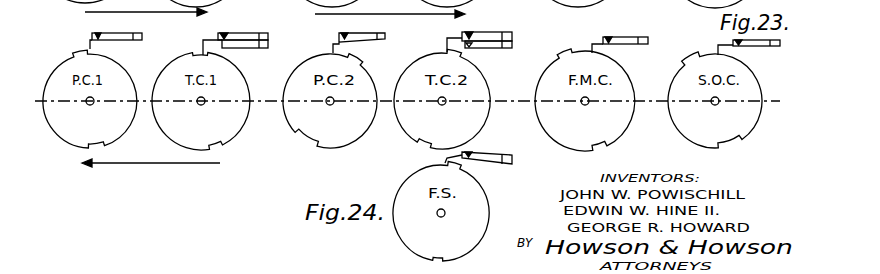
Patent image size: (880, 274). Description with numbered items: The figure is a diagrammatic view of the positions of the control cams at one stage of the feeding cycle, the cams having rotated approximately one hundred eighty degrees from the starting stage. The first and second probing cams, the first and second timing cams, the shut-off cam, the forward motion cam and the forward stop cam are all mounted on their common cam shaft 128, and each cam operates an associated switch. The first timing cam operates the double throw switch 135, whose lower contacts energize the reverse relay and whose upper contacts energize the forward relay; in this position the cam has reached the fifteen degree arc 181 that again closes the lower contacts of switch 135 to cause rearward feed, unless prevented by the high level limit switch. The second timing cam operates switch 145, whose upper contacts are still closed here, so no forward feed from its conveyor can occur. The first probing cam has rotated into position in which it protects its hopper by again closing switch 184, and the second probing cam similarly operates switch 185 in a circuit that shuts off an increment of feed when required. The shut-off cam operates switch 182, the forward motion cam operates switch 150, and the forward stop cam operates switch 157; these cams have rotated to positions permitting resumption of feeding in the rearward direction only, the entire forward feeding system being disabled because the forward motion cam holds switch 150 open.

In FIG. 23, the cam shaft 128 is at (139, 85).
In FIG. 23, the switch 135 is at (244, 30).
In FIG. 23, the switch 145 is at (487, 48).
In FIG. 23, the switch 150 is at (635, 35).
In FIG. 24, the switch 157 is at (489, 150).
In FIG. 23, the arc of rotation 181 is at (199, 48).
In FIG. 23, the switch 182 is at (752, 55).
In FIG. 23, the switch 184 is at (133, 32).
In FIG. 23, the switch 185 is at (364, 45).